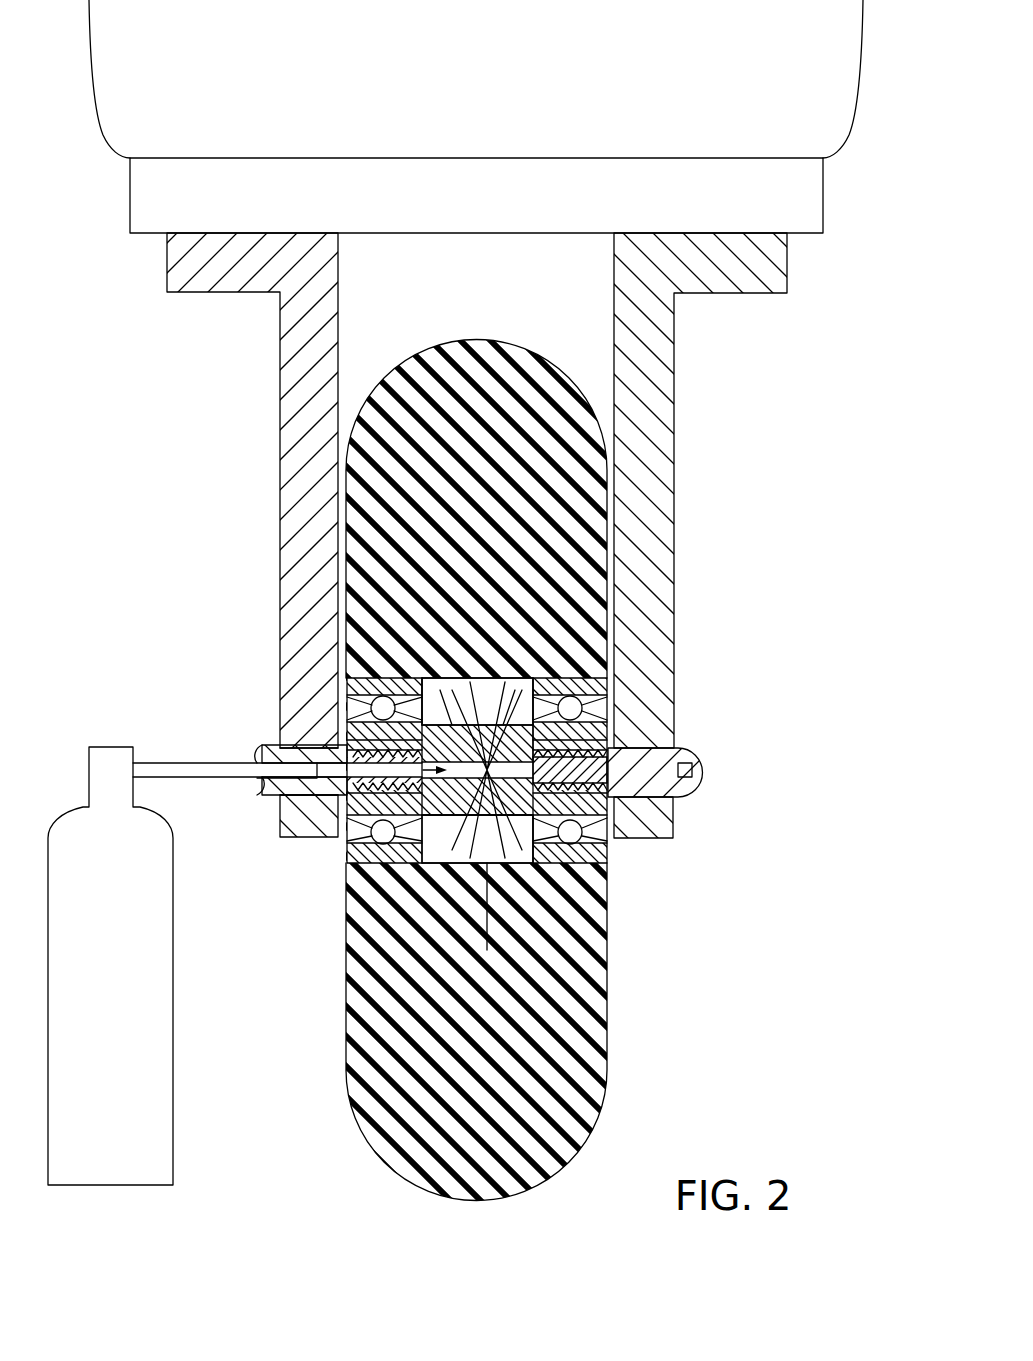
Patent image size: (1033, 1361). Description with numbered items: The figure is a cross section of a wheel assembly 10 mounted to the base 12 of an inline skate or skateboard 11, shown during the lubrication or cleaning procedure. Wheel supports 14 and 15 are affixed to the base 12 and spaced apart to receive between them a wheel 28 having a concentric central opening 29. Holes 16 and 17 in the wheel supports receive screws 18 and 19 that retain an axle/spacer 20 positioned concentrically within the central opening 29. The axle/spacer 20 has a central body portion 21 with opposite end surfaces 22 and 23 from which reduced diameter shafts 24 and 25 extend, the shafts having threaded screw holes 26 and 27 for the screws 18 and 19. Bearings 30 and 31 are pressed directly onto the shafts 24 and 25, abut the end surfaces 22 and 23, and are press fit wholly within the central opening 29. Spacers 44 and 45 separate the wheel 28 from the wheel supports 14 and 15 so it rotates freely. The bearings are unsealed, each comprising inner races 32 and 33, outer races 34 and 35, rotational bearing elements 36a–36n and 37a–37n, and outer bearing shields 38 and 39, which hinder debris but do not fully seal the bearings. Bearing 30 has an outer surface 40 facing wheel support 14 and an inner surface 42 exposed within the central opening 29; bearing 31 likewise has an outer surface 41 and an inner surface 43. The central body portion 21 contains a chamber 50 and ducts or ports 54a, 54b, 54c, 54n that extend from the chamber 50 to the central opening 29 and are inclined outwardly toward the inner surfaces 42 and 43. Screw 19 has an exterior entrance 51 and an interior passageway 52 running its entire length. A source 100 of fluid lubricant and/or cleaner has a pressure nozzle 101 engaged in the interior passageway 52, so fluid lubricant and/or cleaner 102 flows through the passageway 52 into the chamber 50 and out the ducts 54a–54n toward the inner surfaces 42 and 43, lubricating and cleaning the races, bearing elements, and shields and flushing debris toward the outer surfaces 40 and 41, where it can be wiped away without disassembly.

The wheel assembly 10 is at (218, 432).
The inline skate or skateboard 11 is at (98, 112).
The base 12 is at (455, 206).
The wheel support 14 is at (516, 680).
The wheel support 15 is at (516, 680).
The hole 16 is at (516, 680).
The hole 17 is at (516, 680).
The screw 18 is at (516, 680).
The screw 19 is at (226, 747).
The axle/spacer 20 is at (516, 716).
The central body portion 21 is at (378, 635).
The end surface 22 is at (592, 906).
The end surface 23 is at (394, 877).
The reduced diameter shaft 24 is at (629, 739).
The reduced diameter shaft 25 is at (248, 719).
The threaded screw hole 26 is at (653, 646).
The threaded screw hole 27 is at (311, 739).
The wheel 28 is at (516, 680).
The central opening 29 is at (453, 575).
The bearing 30 is at (625, 858).
The bearing 31 is at (329, 861).
The inner race 32 is at (643, 714).
The inner race 33 is at (304, 708).
The outer race 34 is at (645, 644).
The outer race 35 is at (315, 652).
The rotational bearing element 36a is at (658, 673).
The rotational bearing element 36n is at (607, 870).
The rotational bearing element 37a is at (315, 677).
The rotational bearing element 37n is at (390, 830).
The outer bearing shield 38 is at (650, 701).
The outer bearing shield 39 is at (313, 851).
The outer surface 40 is at (627, 690).
The outer surface 41 is at (293, 695).
The inner surface 42 is at (576, 860).
The inner surface 43 is at (361, 857).
The spacer 44 is at (516, 680).
The spacer 45 is at (222, 750).
The chamber 50 is at (645, 616).
The exterior entrance 51 is at (247, 791).
The interior passageway 52 is at (276, 821).
The duct or port 54a is at (648, 652).
The duct or port 54b is at (315, 656).
The duct or port 54c is at (406, 888).
The duct or port 54n is at (600, 888).
The source of fluid lubricant and/or cleaner 100 is at (147, 966).
The pressure nozzle 101 is at (258, 745).
The fluid lubricant and/or cleaner 102 is at (516, 680).